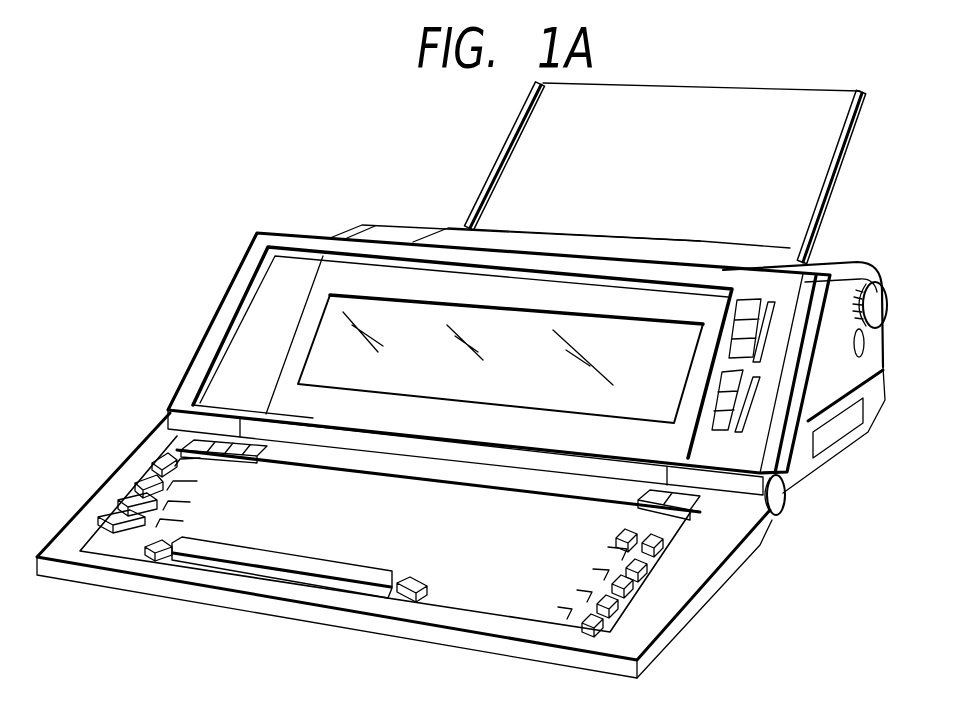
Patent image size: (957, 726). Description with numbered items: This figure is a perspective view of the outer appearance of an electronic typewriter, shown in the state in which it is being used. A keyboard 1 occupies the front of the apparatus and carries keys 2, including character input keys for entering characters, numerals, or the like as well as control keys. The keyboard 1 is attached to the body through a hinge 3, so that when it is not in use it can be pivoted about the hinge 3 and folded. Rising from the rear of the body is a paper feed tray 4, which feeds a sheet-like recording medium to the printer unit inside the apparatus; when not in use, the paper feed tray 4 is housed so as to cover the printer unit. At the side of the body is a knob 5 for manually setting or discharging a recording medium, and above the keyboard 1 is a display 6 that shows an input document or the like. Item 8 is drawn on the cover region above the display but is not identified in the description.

The keyboard 1 is at (678, 592).
The keys 2 is at (147, 480).
The hinge 3 is at (782, 496).
The paper feed tray 4 is at (806, 167).
The knob 5 is at (878, 303).
The display 6 is at (335, 342).
The display cover 8 is at (395, 242).